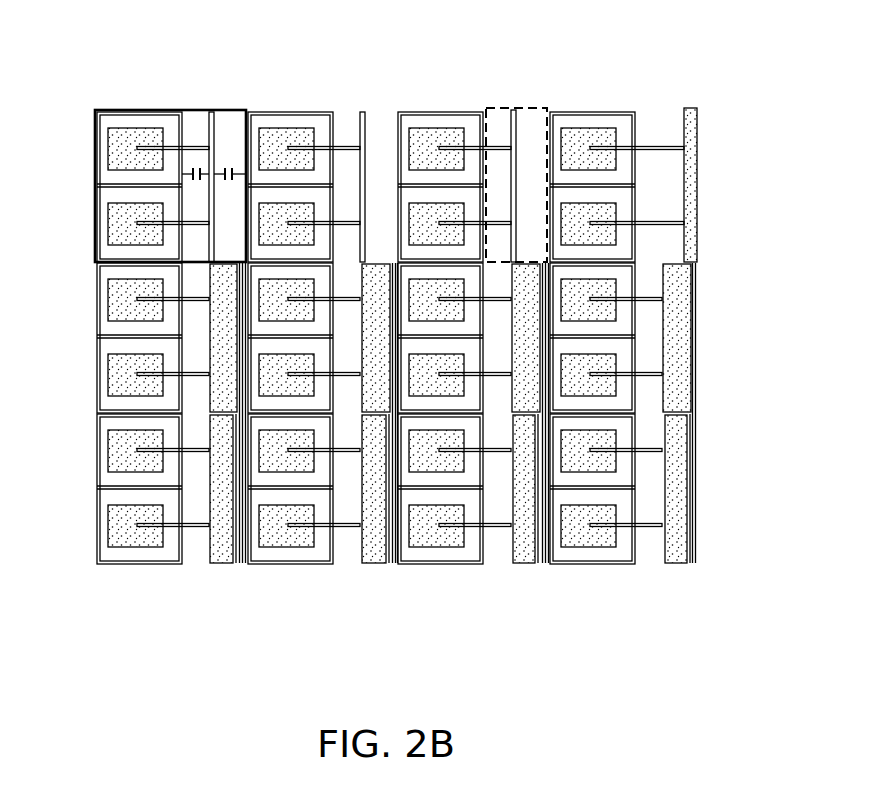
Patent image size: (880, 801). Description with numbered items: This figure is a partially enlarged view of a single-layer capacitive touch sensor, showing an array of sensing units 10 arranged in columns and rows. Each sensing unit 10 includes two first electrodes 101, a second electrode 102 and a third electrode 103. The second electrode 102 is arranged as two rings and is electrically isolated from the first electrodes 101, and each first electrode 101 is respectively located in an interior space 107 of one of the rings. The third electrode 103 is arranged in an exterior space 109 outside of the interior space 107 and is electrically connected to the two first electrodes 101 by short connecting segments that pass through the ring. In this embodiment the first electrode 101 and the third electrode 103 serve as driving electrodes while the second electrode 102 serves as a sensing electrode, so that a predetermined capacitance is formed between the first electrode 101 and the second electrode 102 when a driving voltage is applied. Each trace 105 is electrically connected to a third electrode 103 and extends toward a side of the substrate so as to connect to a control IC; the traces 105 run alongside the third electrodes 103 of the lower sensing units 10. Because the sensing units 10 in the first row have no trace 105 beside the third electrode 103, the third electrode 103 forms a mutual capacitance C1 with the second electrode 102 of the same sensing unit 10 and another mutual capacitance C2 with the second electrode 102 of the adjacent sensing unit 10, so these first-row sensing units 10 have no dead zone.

The sensing unit 10 is at (150, 110).
The first electrode 101 is at (118, 156).
The second electrode 102 is at (182, 128).
The third electrode 103 is at (213, 143).
The trace 105 is at (698, 310).
The interior space 107 is at (406, 193).
The exterior space 109 is at (518, 107).
The mutual capacitance C1 is at (195, 186).
The mutual capacitance C2 is at (230, 186).